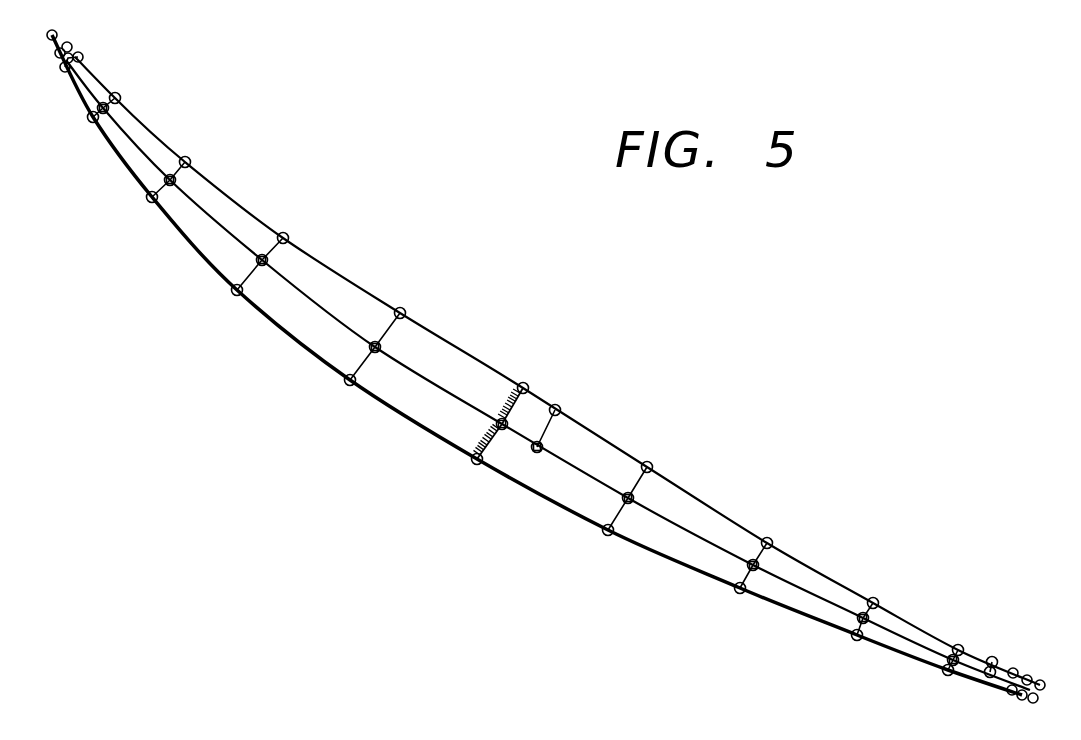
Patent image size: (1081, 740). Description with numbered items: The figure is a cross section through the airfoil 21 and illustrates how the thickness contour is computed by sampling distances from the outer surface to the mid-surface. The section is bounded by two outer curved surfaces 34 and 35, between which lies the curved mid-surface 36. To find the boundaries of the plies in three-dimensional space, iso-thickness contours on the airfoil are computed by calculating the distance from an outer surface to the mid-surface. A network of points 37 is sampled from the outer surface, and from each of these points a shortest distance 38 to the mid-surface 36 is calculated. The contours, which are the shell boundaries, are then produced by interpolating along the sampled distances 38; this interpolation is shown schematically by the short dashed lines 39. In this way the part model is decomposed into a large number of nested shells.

The airfoil 21 is at (347, 410).
The outer curved surface 34 is at (448, 342).
The outer curved surface 35 is at (385, 410).
The curved mid-surface 36 is at (450, 396).
The network of points 37 is at (477, 459).
The shortest distances 38 is at (493, 450).
The short dashed lines 39 is at (494, 393).